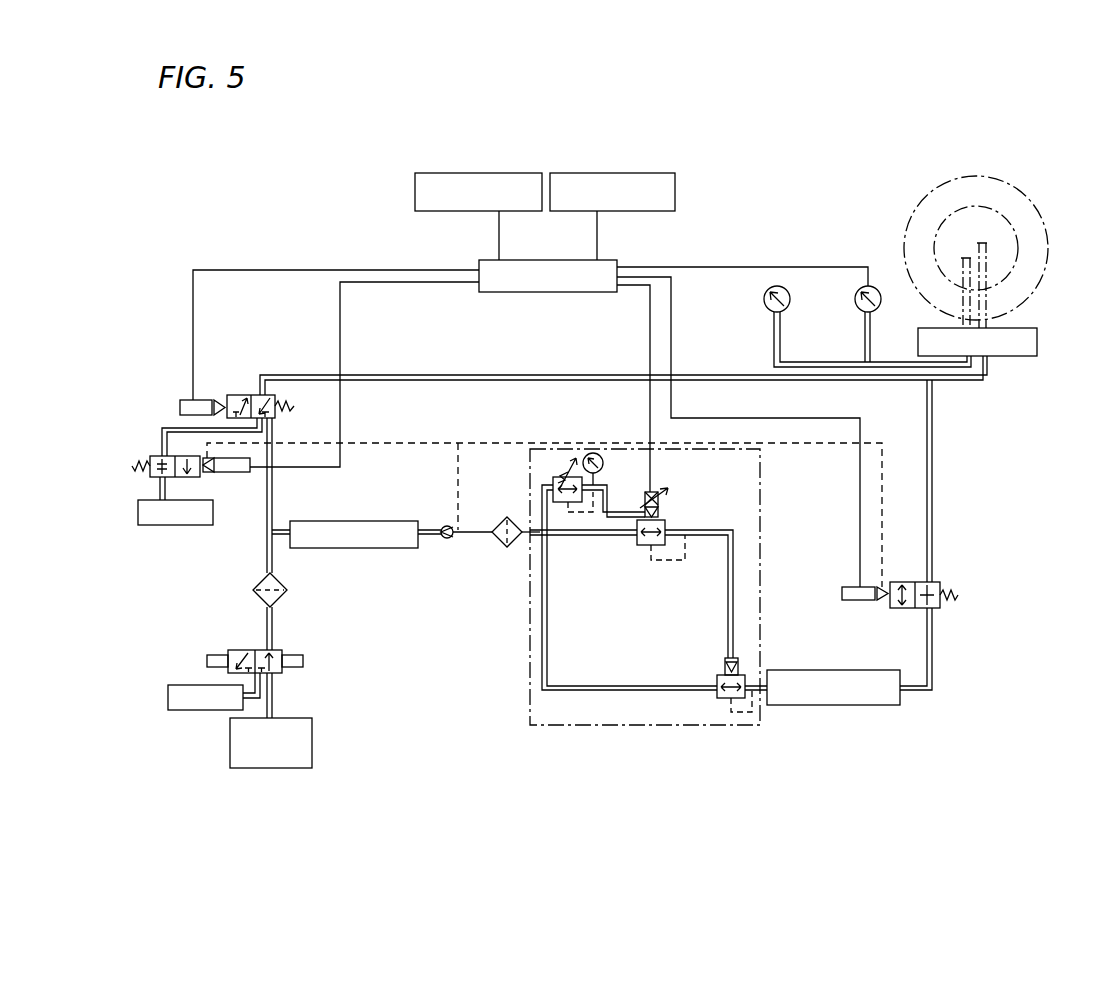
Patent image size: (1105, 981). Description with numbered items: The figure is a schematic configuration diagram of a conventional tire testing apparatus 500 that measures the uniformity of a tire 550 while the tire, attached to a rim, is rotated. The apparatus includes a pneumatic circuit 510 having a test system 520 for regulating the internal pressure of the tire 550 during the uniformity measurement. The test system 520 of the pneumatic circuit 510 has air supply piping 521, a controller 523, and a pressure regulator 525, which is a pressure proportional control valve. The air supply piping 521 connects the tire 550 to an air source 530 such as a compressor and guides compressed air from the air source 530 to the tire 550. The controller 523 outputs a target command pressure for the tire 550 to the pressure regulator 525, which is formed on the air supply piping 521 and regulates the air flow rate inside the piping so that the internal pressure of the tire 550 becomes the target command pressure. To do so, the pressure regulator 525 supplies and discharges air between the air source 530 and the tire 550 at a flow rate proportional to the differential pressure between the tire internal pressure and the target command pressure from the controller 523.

The pneumatic control system 500 is at (876, 160).
The tire 550 is at (1030, 192).
The controller 523 is at (547, 292).
The air supply piping 521 is at (933, 648).
The air source 530 is at (312, 728).
The pneumatic circuit 510 is at (418, 740).
The test system 520 is at (731, 736).
The pressure regulator 525 is at (590, 727).